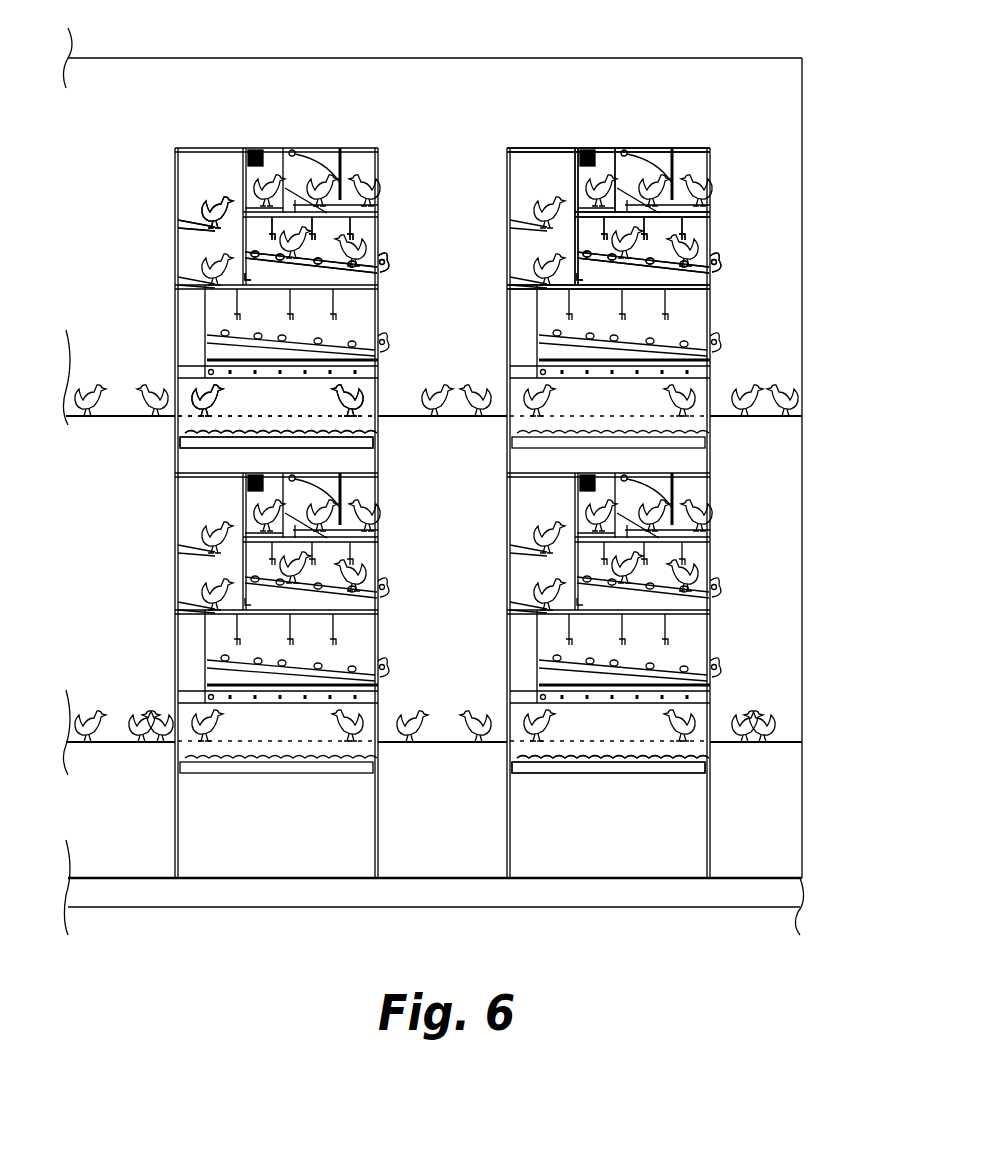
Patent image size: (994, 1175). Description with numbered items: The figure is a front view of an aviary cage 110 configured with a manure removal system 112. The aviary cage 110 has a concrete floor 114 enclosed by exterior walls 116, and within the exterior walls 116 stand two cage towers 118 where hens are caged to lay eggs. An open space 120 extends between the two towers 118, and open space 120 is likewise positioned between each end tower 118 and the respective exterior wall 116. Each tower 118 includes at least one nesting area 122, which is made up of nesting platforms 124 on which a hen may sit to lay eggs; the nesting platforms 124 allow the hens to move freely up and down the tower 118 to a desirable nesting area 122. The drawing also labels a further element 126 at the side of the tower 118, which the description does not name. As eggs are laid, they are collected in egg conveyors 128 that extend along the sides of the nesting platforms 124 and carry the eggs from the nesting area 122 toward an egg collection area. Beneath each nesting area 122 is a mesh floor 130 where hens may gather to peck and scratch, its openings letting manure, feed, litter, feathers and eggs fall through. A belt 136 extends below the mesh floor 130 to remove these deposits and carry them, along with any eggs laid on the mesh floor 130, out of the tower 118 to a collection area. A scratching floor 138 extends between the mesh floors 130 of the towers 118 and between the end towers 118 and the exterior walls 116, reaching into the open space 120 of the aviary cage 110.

The aviary cage 110 is at (590, 27).
The manure removal system 112 is at (396, 410).
The concrete floor 114 is at (440, 885).
The exterior walls 116 is at (802, 200).
The cage tower 118 is at (320, 113).
The open space 120 is at (140, 337).
The nesting area 122 is at (500, 150).
The nesting platforms 124 is at (378, 252).
The nest area 126 is at (207, 216).
The egg conveyors 128 is at (380, 262).
The mesh floor 130 is at (245, 416).
The belt 136 is at (373, 452).
The scratching floor 138 is at (462, 420).